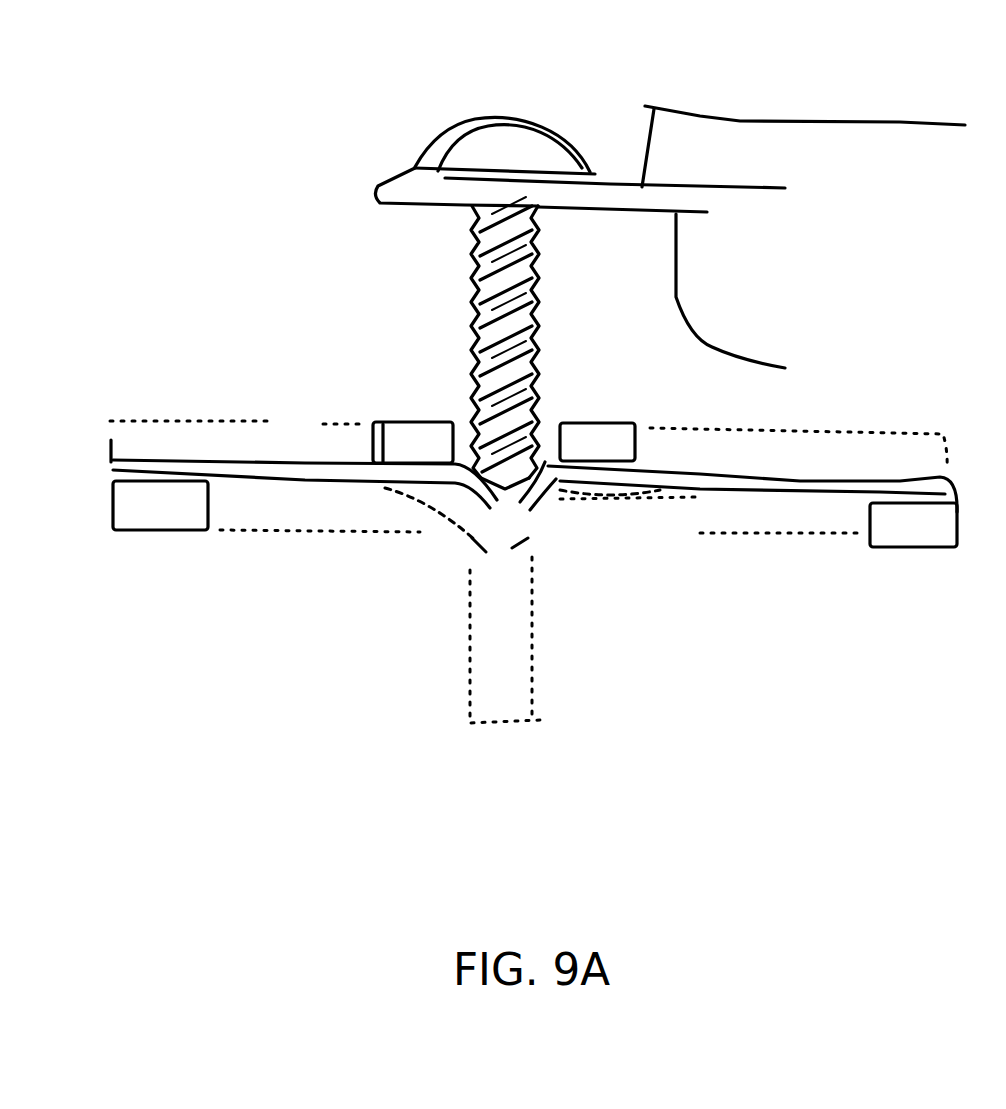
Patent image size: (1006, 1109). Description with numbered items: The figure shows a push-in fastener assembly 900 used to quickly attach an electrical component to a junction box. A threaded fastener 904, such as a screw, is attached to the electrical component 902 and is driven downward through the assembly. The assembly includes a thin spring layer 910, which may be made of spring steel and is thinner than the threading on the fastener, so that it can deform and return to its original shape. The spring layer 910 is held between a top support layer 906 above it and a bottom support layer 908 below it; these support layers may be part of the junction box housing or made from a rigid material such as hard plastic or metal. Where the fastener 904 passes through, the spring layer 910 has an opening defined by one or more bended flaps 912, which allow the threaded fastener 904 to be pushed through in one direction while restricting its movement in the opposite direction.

The push-in fastener assembly 900 is at (712, 601).
The electrical component 902 is at (623, 196).
The threaded fastener 904 is at (470, 252).
The top support layer 906 is at (415, 437).
The bottom support layer 908 is at (173, 497).
The spring layer 910 is at (268, 466).
The bended flaps 912 is at (448, 505).